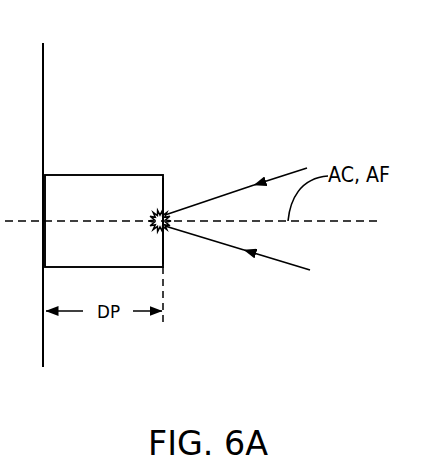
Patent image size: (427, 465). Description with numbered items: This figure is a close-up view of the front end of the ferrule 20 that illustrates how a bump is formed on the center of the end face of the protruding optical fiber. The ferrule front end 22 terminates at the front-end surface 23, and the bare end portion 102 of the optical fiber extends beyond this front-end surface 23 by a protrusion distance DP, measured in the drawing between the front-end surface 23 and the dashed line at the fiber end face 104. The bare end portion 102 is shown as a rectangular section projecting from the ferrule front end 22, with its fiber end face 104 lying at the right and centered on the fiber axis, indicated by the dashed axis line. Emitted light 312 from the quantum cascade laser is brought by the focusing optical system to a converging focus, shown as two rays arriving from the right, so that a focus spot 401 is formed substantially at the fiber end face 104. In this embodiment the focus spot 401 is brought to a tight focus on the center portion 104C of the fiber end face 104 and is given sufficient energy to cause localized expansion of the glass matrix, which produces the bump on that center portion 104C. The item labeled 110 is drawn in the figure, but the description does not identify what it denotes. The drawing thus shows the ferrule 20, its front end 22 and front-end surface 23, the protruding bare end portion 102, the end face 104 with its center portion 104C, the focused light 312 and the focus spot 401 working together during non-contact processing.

The ferrule 20 is at (199, 64).
The ferrule front end 22 is at (133, 81).
The front-end surface 23 is at (43, 90).
The bare end portion 102 is at (93, 175).
The fiber end face 104 is at (163, 182).
The center portion 104C is at (181, 236).
The nozzle tip 110 is at (143, 157).
The light 312 is at (268, 260).
The focus spot 401 is at (165, 232).